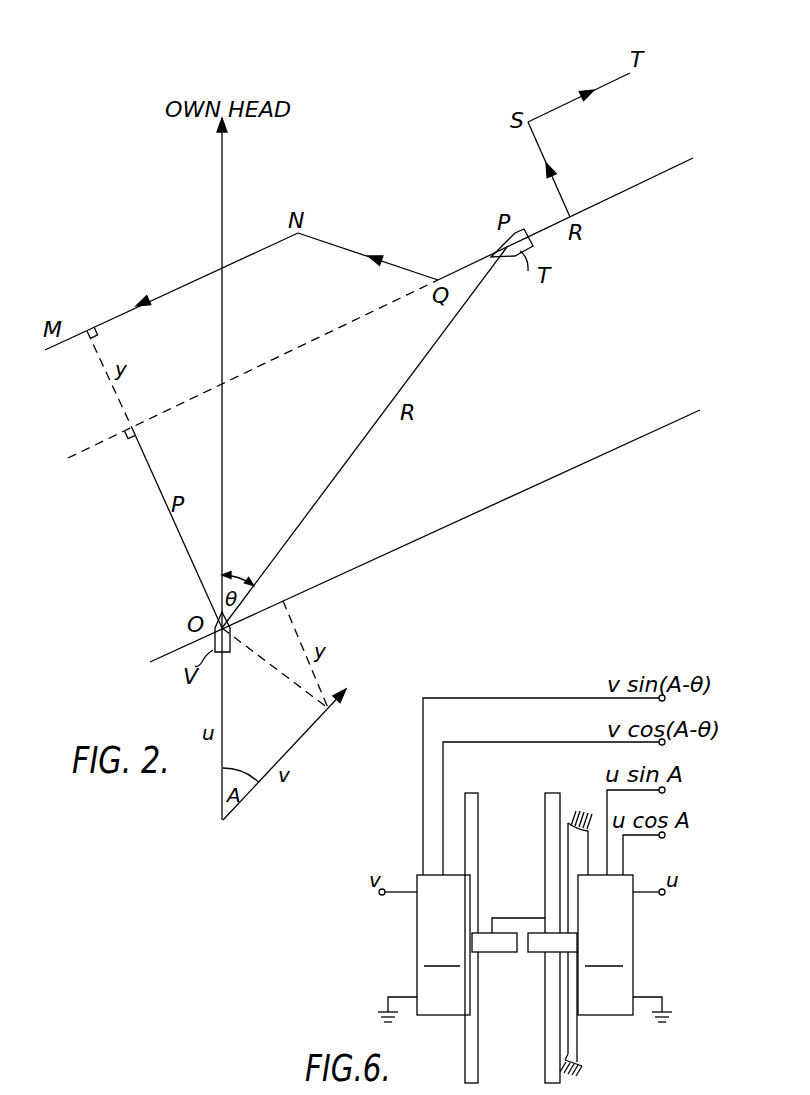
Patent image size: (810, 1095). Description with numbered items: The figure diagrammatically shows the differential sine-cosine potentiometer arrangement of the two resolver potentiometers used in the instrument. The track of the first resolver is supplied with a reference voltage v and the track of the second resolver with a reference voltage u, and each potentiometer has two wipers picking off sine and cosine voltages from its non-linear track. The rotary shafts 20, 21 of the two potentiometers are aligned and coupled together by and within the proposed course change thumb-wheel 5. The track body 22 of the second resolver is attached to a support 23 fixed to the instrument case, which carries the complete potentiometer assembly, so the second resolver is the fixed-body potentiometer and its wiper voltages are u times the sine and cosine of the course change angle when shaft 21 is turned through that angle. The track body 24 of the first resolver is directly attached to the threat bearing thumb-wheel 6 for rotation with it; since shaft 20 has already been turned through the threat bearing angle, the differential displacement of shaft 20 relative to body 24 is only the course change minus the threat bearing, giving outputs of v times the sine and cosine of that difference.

The proposed course change A thumb-wheel 5 is at (547, 865).
The threat bearing θ thumb-wheel 6 is at (474, 840).
The rotary shaft 20 is at (502, 945).
The rotary shaft 21 is at (542, 947).
The track body 22 is at (620, 992).
The support 23 is at (579, 1042).
The track body 24 is at (435, 1002).